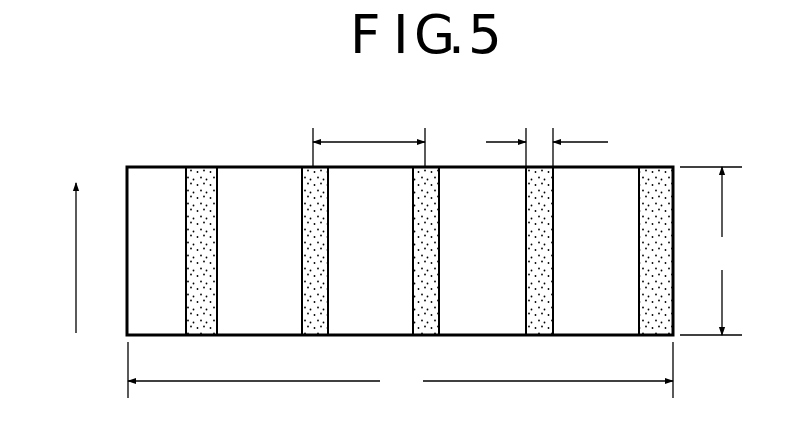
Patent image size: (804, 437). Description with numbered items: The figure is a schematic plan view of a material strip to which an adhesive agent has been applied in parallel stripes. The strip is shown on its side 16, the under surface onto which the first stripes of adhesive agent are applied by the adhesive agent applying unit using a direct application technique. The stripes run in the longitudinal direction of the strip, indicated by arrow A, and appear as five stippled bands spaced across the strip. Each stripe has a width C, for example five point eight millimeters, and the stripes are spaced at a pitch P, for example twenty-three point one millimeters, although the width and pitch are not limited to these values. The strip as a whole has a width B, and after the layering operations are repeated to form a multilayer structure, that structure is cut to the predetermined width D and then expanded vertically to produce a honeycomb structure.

The side 16 is at (655, 182).
The pitch P is at (369, 138).
The width C is at (547, 136).
The predetermined width D is at (711, 251).
The width B is at (400, 370).
The arrow A is at (57, 257).